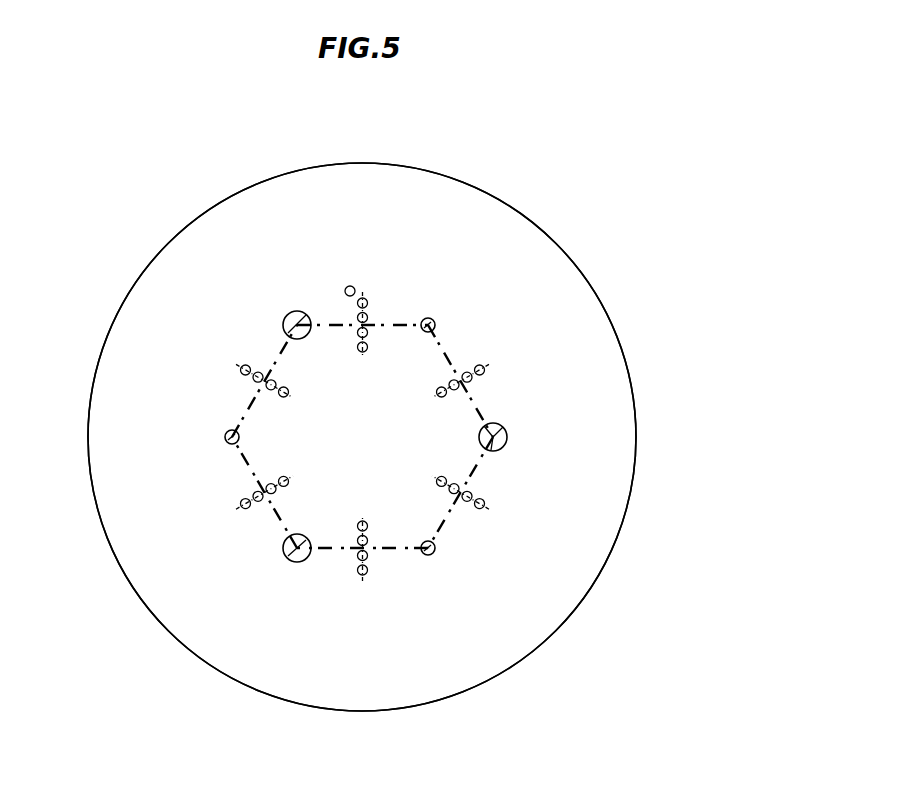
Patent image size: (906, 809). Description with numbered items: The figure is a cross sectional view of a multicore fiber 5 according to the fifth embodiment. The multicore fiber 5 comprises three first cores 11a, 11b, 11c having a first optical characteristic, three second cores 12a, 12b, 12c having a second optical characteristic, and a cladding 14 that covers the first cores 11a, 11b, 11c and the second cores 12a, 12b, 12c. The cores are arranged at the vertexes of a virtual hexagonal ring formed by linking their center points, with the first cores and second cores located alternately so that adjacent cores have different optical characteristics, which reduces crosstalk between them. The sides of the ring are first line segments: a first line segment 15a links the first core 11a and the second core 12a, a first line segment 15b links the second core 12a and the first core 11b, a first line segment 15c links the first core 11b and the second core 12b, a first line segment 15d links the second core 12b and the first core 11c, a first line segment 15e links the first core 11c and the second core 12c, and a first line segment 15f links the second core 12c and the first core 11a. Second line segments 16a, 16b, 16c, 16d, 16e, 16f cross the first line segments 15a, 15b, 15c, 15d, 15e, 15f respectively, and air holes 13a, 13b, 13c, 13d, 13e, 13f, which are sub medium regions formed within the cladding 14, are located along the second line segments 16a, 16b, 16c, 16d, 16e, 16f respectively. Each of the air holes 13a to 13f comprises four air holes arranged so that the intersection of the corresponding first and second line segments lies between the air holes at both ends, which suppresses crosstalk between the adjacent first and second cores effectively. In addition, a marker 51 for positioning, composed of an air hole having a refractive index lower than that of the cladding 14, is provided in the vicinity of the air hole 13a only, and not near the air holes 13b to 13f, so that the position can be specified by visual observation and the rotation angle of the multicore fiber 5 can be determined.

The multicore fiber 5 is at (524, 184).
The first core 11a is at (290, 312).
The first core 11b is at (507, 435).
The first core 11c is at (294, 562).
The second core 12a is at (433, 320).
The second core 12b is at (432, 555).
The second core 12c is at (223, 433).
The air hole 13a is at (366, 297).
The air hole 13b is at (480, 365).
The air hole 13c is at (485, 502).
The air hole 13d is at (368, 573).
The air hole 13e is at (246, 508).
The air hole 13f is at (239, 371).
The cladding 14 is at (472, 677).
The first line segment 15a is at (393, 327).
The first line segment 15b is at (478, 407).
The first line segment 15c is at (446, 515).
The first line segment 15d is at (334, 556).
The first line segment 15e is at (249, 466).
The first line segment 15f is at (280, 356).
The second line segment 16a is at (433, 319).
The second line segment 16b is at (451, 381).
The second line segment 16c is at (455, 482).
The second line segment 16d is at (376, 541).
The second line segment 16e is at (280, 496).
The second line segment 16f is at (265, 395).
The marker 51 is at (350, 286).